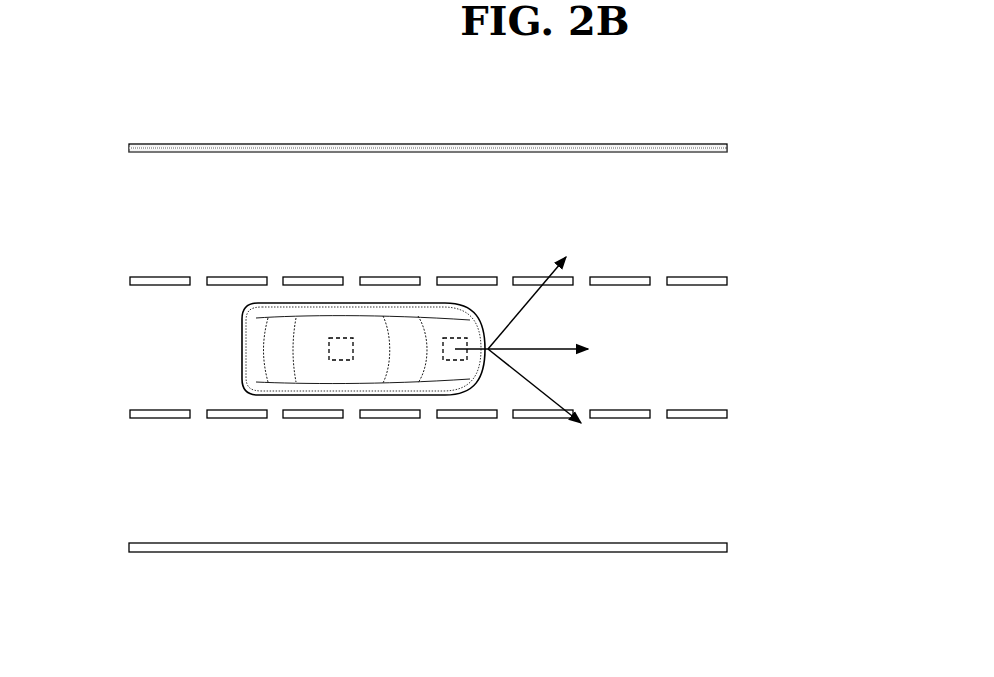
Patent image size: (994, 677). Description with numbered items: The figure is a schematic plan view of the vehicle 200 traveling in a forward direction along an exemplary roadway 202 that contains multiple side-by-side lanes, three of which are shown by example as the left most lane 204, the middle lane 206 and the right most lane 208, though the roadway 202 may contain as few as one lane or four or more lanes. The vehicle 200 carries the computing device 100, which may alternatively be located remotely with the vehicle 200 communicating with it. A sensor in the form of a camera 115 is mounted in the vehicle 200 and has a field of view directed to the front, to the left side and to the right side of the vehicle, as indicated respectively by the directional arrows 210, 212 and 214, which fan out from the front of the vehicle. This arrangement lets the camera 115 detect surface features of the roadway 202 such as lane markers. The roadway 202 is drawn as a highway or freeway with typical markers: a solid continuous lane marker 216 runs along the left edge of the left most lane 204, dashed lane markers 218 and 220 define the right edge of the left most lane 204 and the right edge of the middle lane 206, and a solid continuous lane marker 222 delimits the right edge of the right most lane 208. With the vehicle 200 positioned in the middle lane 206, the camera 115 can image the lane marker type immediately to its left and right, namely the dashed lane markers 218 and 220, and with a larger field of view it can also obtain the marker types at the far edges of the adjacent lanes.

The computing device 100 is at (341, 362).
The camera 115 is at (455, 362).
The vehicle 200 is at (363, 338).
The roadway 202 is at (307, 138).
The left most lane 204 is at (590, 222).
The middle lane 206 is at (633, 340).
The right most lane 208 is at (693, 475).
The directional arrow 210 is at (528, 348).
The directional arrow 212 is at (528, 300).
The directional arrow 214 is at (535, 388).
The solid continuous lane marker 216 is at (467, 143).
The dashed lane marker 218 is at (166, 276).
The dashed lane marker 220 is at (168, 409).
The solid continuous lane marker 222 is at (473, 550).